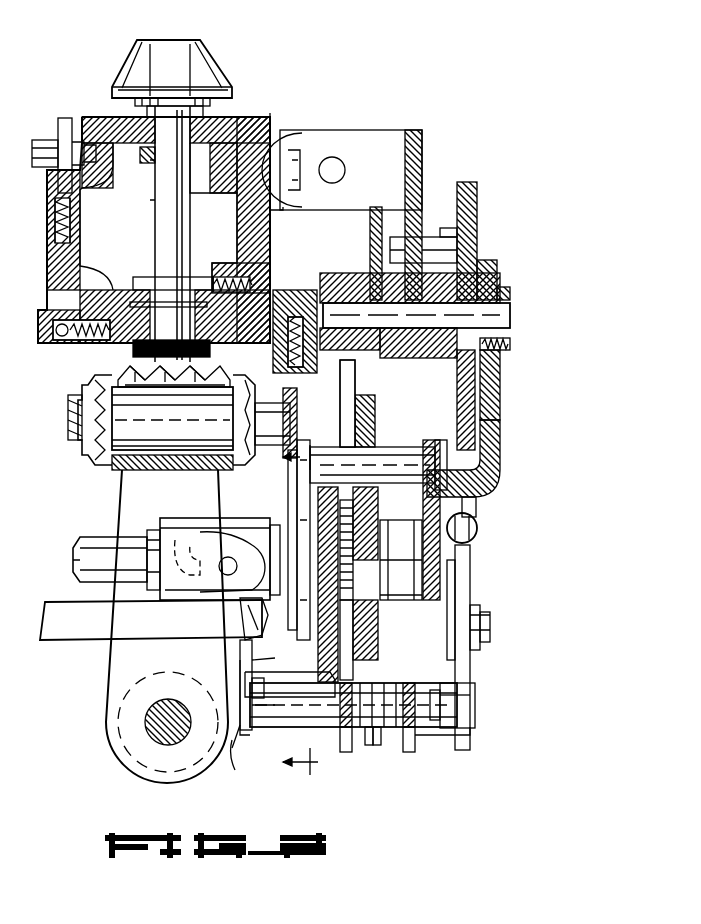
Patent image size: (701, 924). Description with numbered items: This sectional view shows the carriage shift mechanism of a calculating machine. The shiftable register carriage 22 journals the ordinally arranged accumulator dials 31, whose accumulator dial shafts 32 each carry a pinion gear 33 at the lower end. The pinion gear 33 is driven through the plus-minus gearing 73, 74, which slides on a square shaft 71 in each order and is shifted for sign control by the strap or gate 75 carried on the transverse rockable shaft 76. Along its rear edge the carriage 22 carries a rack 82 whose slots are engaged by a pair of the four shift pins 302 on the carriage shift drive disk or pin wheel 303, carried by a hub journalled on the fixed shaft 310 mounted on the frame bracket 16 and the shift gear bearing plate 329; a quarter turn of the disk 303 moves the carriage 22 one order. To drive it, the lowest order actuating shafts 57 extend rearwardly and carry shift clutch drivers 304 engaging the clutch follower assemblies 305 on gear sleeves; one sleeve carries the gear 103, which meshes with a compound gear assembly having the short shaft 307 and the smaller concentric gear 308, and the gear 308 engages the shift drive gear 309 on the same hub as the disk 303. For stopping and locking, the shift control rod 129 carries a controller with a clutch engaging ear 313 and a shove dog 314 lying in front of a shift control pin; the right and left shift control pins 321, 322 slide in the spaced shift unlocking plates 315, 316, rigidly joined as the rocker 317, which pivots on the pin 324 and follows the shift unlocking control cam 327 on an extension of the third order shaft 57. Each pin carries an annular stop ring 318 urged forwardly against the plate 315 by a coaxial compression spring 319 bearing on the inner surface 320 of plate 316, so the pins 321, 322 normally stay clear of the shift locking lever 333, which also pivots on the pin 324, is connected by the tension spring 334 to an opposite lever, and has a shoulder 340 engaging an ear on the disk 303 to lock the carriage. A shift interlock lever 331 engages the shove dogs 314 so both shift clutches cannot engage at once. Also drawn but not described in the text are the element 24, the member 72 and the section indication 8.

The shiftable register carriage 22 is at (246, 105).
The accumulator dials 31 is at (172, 46).
The bolt 24 is at (92, 125).
The accumulator dial shafts 32 is at (165, 238).
The rack 82 is at (420, 160).
The shift drive gear 309 is at (376, 254).
The shift pins 302 is at (430, 245).
The carriage shift drive disk or pin wheel 303 is at (472, 198).
The frame bracket 16 is at (334, 278).
The fixed shaft 310 is at (492, 312).
The shoulder 340 is at (471, 340).
The pinion gear 33 is at (135, 377).
The roller 72 is at (221, 419).
The plus-minus gearing 73 is at (95, 445).
The plus-minus gearing 74 is at (238, 385).
The strap or gate 75 is at (125, 468).
The square shaft 71 is at (268, 406).
The section line 8 is at (284, 610).
The transverse rockable shaft 76 is at (168, 722).
The lowest order actuating shafts 57 is at (97, 550).
The shift clutch drivers 304 is at (290, 508).
The clutch follower assemblies 305 is at (290, 488).
The shift control rod 129 is at (88, 622).
The clutch engaging ear 313 is at (238, 652).
The shove dog 314 is at (246, 684).
The gear 103 is at (330, 640).
The short shaft 307 is at (392, 470).
The smaller concentric gear 308 is at (375, 428).
The shift gear bearing plate 329 is at (490, 452).
The shift unlocking control cam 327 is at (472, 494).
The tension spring 334 is at (478, 530).
The shift locking lever 333 is at (476, 570).
The pin 324 is at (492, 627).
The left shift control pin 322 is at (460, 698).
The inner surface 320 is at (400, 748).
The right shift control pin 321 is at (298, 720).
The shift interlock lever 331 is at (244, 761).
The shift unlocking plate 315 is at (340, 740).
The annular stop ring 318 is at (368, 740).
The integral lever or rocker 317 is at (378, 740).
The coaxial compression spring 319 is at (400, 745).
The shift unlocking plate 316 is at (460, 738).